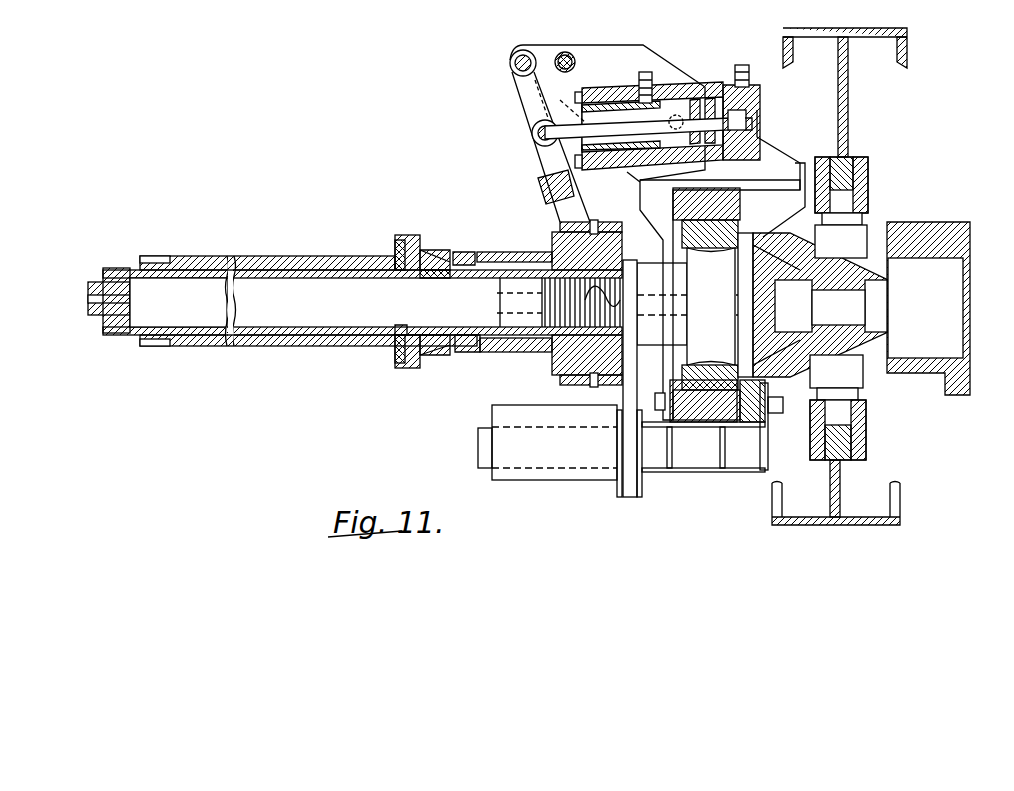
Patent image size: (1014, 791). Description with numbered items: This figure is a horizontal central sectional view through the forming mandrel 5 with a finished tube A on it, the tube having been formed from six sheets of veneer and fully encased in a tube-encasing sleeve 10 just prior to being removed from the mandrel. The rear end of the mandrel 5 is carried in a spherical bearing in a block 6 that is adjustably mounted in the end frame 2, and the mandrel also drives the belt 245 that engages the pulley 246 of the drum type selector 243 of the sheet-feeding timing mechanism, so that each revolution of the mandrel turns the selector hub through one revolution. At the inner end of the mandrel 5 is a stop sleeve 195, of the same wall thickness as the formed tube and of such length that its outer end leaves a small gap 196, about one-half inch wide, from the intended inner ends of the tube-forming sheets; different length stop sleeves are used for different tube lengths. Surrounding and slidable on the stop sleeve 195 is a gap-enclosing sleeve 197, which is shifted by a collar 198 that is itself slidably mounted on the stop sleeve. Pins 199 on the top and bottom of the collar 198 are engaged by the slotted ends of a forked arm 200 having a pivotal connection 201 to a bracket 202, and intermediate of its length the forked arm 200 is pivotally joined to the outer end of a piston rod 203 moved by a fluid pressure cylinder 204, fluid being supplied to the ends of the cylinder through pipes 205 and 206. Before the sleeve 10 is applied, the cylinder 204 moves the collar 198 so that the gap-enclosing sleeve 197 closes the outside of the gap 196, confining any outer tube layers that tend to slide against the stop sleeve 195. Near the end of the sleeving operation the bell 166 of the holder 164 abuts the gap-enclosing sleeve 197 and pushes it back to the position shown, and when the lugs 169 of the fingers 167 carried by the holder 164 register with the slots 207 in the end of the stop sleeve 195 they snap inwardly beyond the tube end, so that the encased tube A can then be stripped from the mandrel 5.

The frame 2 is at (882, 28).
The forming mandrel 5 is at (291, 270).
The block 6 is at (720, 455).
The tube-encasing sleeve 10 is at (272, 246).
The tube A is at (332, 257).
The holder 164 is at (403, 370).
The bell 166 is at (462, 251).
The fingers 167 is at (410, 235).
The lugs 169 is at (424, 267).
The stop sleeve 195 is at (496, 348).
The gap 196 is at (397, 339).
The gap-enclosing sleeve 197 is at (491, 256).
The collar 198 is at (555, 372).
The pins 199 is at (622, 292).
The forked arm 200 is at (572, 203).
The pivotal connection 201 is at (510, 57).
The bracket 202 is at (598, 45).
The piston rod 203 is at (579, 110).
The fluid pressure cylinder 204 is at (672, 83).
The pipe 205 is at (744, 72).
The pipe 206 is at (638, 82).
The slots 207 is at (452, 330).
The drum type selector 243 is at (591, 489).
The belt 245 is at (631, 355).
The pulley 246 is at (644, 485).